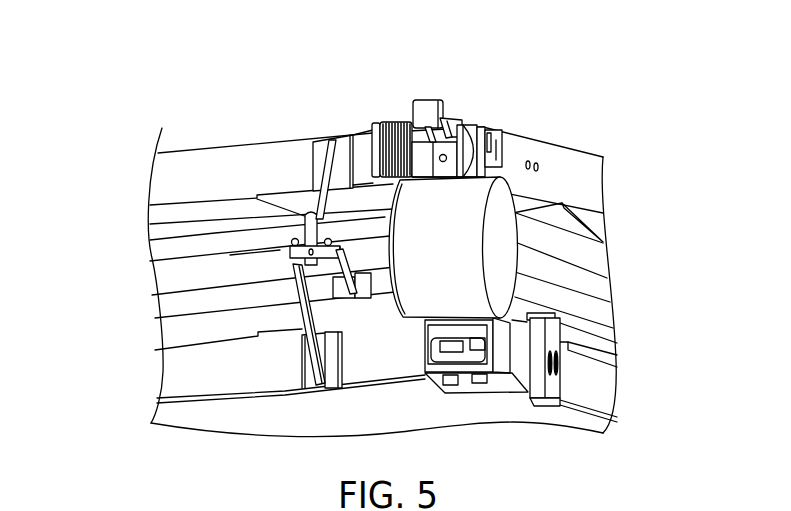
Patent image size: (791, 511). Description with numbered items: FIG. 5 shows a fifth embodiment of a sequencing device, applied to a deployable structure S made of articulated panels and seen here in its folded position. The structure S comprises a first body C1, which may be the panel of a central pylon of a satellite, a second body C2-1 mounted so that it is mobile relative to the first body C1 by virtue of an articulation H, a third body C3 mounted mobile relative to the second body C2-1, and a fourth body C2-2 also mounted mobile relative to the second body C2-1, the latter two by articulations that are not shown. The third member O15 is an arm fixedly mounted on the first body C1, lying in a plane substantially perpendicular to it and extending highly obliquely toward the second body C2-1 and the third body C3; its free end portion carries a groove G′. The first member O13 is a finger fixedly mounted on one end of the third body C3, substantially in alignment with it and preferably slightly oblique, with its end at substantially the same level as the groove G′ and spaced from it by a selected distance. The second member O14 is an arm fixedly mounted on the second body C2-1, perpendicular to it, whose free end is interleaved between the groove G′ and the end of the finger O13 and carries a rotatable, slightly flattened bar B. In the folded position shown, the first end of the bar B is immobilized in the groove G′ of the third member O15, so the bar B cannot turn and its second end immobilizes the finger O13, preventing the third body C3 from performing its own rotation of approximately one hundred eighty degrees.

The structure S is at (416, 80).
The articulation H is at (497, 156).
The second body C2-1 is at (600, 149).
The fourth body C2-2 is at (600, 240).
The third body C3 is at (600, 300).
The first body C1 is at (598, 361).
The second member O14 is at (322, 185).
The rotatable bar B is at (295, 242).
The groove G′ is at (264, 271).
The third member O15 is at (303, 330).
The first member O13 is at (352, 278).